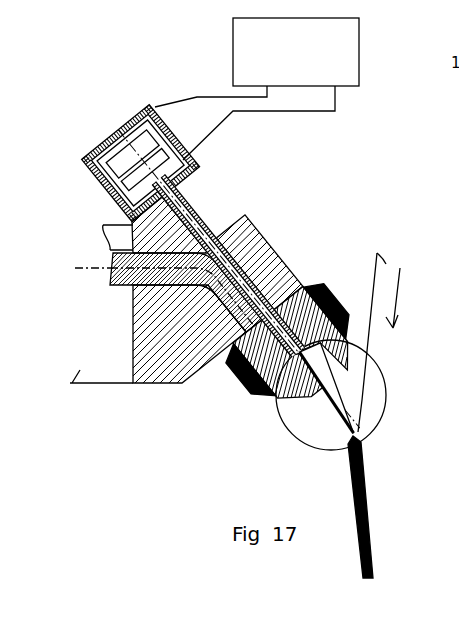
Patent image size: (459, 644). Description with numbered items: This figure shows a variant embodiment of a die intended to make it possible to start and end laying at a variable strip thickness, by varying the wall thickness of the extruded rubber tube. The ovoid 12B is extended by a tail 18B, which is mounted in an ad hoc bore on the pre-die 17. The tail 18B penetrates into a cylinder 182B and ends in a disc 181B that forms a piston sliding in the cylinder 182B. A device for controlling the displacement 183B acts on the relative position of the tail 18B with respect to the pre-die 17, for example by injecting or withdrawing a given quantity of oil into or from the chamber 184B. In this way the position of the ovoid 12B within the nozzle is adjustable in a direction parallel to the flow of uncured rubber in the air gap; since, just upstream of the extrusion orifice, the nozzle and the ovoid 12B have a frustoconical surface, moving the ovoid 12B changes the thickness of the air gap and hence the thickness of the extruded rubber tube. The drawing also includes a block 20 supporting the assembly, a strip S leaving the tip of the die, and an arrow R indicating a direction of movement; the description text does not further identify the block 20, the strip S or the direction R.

The chamber 184B is at (100, 140).
The disc 181B is at (125, 163).
The cylinder 182B is at (155, 160).
The device for controlling the displacement 183B is at (312, 57).
The tail 18B is at (200, 213).
The support block 20 is at (123, 240).
The pre-die 17 is at (276, 251).
The ovoid 12B is at (386, 400).
The strip / substrate S is at (368, 280).
The direction of movement R is at (399, 298).